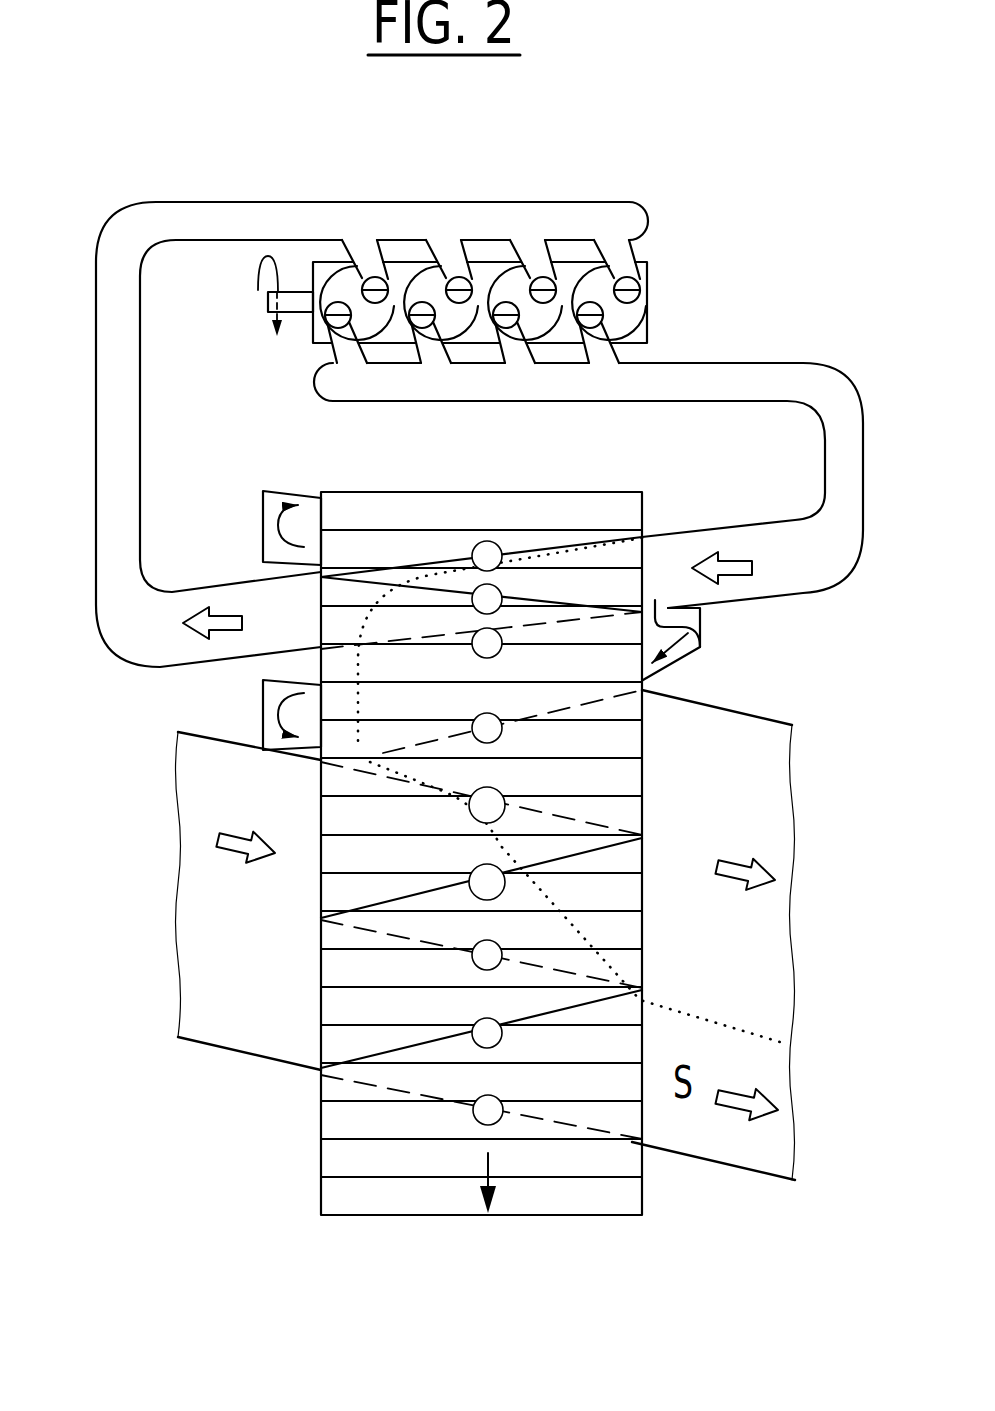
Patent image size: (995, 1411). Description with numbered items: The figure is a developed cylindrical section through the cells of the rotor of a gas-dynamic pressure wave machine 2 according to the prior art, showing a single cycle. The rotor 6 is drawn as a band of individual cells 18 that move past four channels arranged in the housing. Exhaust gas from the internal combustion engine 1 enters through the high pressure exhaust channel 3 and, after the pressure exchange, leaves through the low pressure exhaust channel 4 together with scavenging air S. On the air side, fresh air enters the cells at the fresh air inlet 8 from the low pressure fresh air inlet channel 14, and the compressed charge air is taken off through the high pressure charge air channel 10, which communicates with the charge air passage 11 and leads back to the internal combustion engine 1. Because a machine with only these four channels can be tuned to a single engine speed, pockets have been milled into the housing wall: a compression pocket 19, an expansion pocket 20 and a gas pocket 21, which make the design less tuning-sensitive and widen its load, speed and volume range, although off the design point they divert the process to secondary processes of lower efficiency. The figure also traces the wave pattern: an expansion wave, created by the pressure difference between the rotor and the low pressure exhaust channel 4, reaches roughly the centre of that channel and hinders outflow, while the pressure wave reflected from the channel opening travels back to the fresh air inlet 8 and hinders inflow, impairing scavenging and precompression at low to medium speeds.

The internal combustion engine 1 is at (672, 277).
The gas-dynamic pressure wave machine 2 is at (287, 1110).
The high pressure exhaust channel 3 is at (796, 577).
The low pressure exhaust channel 4 is at (757, 797).
The rotor 6 is at (386, 1228).
The fresh air inlet 8 is at (170, 915).
The high pressure charge air channel 10 is at (305, 634).
The charge air passage 11 is at (165, 644).
The low pressure fresh air inlet channel 14 is at (282, 977).
The individual cells 18 is at (580, 1187).
The compression pocket 19 is at (273, 510).
The expansion pocket 20 is at (272, 713).
The gas pocket 21 is at (680, 635).